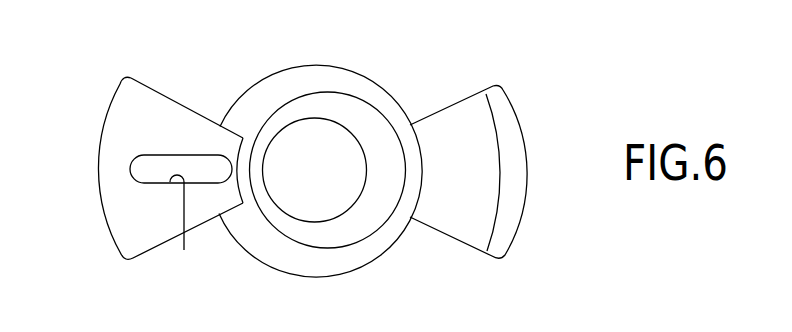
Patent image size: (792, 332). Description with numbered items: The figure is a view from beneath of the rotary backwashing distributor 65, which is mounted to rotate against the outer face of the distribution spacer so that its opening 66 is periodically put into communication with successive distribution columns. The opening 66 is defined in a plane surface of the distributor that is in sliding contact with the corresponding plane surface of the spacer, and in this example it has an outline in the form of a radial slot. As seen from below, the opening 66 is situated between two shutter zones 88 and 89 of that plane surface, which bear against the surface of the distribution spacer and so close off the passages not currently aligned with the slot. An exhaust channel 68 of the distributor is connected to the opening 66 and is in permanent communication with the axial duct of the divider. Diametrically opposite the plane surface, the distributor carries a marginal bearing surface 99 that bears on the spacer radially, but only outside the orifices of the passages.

The rotary backwashing distributor 65 is at (381, 62).
The opening 66 is at (185, 224).
The exhaust channel 68 is at (145, 167).
The shutter zone 88 is at (132, 223).
The shutter zone 89 is at (132, 98).
The marginal bearing surface 99 is at (502, 112).